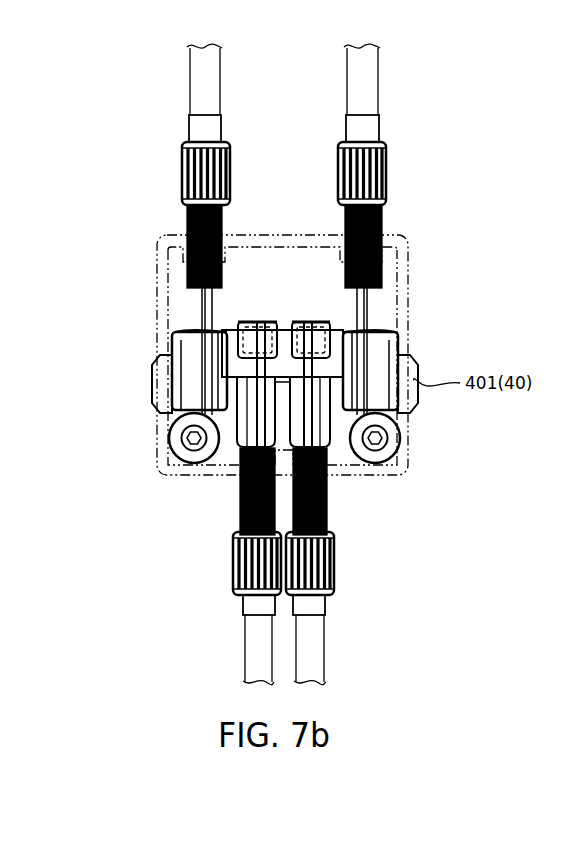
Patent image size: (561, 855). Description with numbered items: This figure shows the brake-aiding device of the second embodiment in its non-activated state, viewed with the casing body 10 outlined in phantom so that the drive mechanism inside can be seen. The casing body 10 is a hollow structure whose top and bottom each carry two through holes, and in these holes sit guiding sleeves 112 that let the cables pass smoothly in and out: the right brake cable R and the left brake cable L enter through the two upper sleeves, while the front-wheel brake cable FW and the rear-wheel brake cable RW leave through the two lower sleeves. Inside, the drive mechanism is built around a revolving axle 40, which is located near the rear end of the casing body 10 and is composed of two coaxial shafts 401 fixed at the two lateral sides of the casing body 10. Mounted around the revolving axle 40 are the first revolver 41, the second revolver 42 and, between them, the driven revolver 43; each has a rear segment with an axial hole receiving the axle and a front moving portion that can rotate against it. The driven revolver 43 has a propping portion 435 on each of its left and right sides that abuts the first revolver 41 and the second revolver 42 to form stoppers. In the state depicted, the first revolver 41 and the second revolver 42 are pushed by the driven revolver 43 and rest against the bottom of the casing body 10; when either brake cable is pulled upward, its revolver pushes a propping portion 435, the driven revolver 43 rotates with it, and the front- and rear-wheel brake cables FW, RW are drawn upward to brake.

The casing body 10 is at (402, 270).
The guiding sleeve 112 is at (200, 165).
The driven revolver 43 is at (278, 325).
The propping portion 435 is at (185, 352).
The shaft 401 is at (157, 380).
The revolving axle 40 is at (244, 371).
The second revolver 42 is at (167, 410).
The first revolver 41 is at (400, 410).
The right brake cable R is at (207, 70).
The left brake cable L is at (362, 77).
The front-wheel brake cable FW is at (255, 648).
The rear-wheel brake cable RW is at (312, 648).